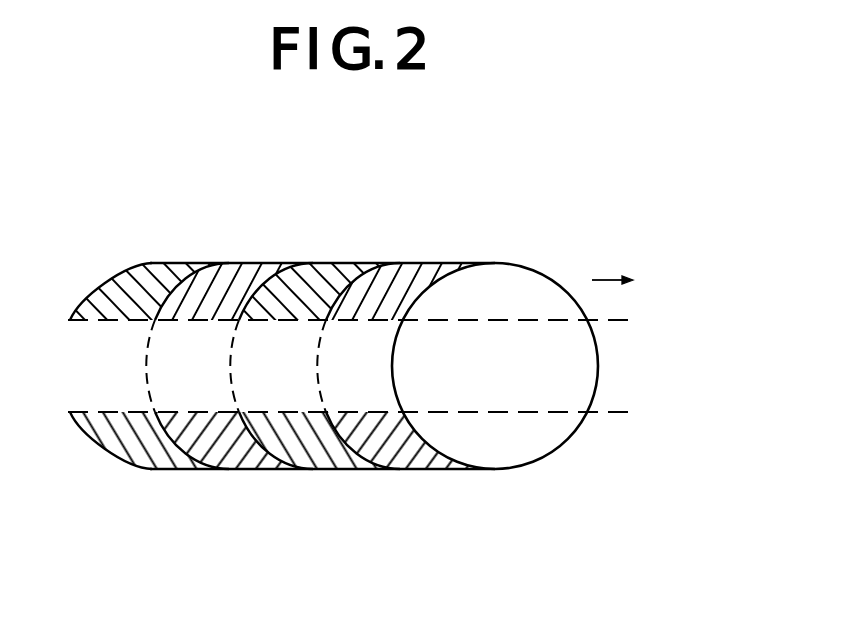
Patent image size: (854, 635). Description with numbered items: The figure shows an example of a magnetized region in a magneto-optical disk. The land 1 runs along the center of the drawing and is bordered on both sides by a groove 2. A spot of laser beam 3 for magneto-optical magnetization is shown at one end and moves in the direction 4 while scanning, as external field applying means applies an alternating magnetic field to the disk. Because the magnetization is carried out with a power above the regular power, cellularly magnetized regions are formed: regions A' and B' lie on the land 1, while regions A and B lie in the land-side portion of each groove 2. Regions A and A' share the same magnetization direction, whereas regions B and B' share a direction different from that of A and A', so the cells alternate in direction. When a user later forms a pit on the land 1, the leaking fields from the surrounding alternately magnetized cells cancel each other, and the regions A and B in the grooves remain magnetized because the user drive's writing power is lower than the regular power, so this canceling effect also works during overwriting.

The land 1 is at (654, 322).
The groove 2 is at (381, 366).
The spot of laser beam 3 is at (498, 264).
The direction of scanning 4 is at (612, 260).
The magnetized region in groove A is at (282, 487).
The magnetized region in groove B is at (282, 240).
The magnetized region on land A' is at (207, 366).
The magnetized region on land B' is at (275, 366).